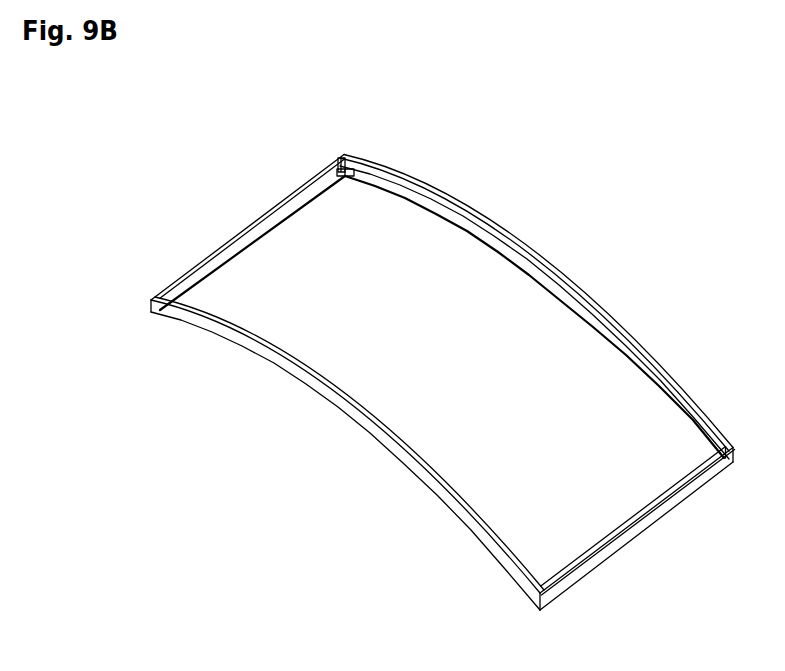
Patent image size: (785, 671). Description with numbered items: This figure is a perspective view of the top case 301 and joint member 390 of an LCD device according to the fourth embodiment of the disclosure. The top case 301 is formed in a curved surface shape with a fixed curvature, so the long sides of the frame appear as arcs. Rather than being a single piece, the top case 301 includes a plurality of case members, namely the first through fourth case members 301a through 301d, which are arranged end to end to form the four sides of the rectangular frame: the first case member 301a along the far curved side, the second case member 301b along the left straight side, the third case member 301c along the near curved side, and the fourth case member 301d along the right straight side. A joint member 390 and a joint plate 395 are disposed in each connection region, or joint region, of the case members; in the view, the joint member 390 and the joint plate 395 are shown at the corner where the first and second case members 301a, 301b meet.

The top case 301 is at (443, 388).
The first case member 301a is at (477, 211).
The second case member 301b is at (255, 220).
The third case member 301c is at (337, 407).
The fourth case member 301d is at (660, 513).
The joint member 390 is at (338, 157).
The joint plate 395 is at (352, 160).